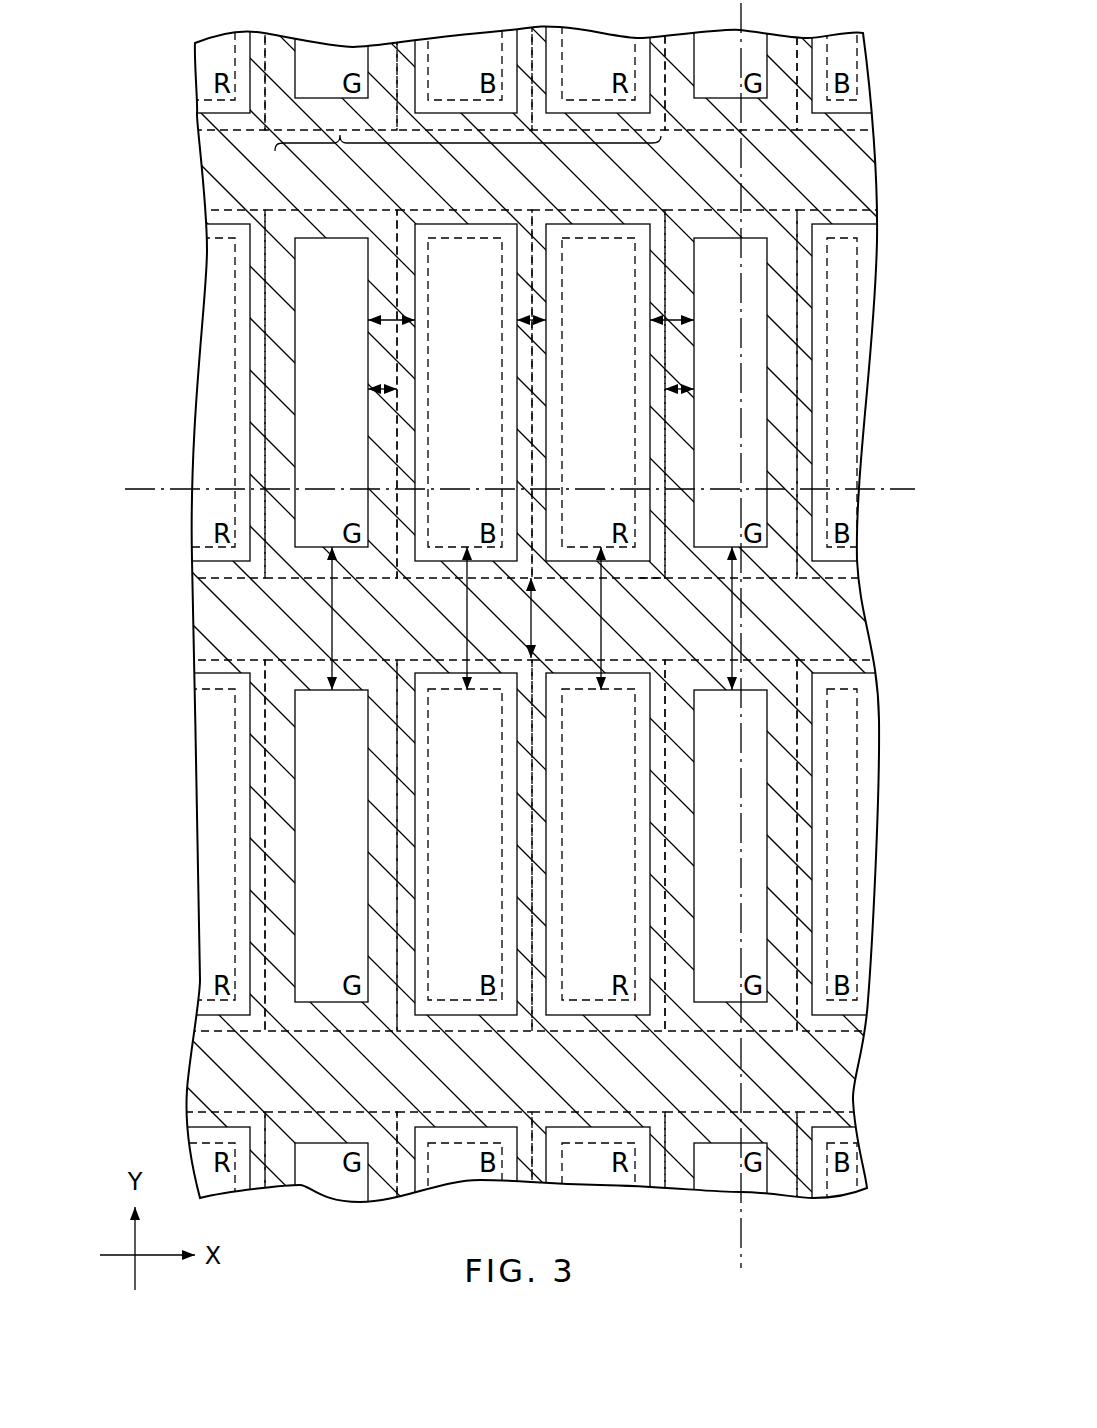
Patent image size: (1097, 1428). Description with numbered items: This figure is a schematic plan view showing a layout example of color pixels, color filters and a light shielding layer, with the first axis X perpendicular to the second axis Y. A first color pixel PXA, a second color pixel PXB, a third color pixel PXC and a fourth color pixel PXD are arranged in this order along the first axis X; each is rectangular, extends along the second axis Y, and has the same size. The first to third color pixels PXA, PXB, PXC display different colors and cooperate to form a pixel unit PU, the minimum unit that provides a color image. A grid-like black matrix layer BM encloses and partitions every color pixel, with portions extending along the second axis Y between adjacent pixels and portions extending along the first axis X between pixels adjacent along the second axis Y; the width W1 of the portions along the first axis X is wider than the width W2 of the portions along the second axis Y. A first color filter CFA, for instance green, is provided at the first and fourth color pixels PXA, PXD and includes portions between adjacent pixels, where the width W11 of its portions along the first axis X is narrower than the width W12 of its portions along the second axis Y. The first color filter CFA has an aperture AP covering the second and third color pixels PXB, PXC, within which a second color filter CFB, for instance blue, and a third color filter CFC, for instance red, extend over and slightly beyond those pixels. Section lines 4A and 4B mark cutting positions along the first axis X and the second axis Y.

The black matrix layer BM is at (223, 169).
The first color filter CFA is at (307, 238).
The second color filter CFB is at (438, 226).
The third color filter CFC is at (582, 238).
The first color pixel PXA is at (347, 238).
The second color pixel PXB is at (480, 238).
The third color pixel PXC is at (622, 238).
The fourth color pixel PXD is at (707, 238).
The pixel unit PU is at (468, 129).
The aperture AP is at (640, 580).
The width of black matrix portions extending along the first axis W1 is at (392, 322).
The width of first color filter portions extending along the first axis W11 is at (380, 392).
The width of black matrix portions extending along the second axis W2 is at (334, 628).
The width of first color filter portions extending along the second axis W12 is at (532, 624).
The section line 4A is at (150, 484).
The section line 4B is at (744, 14).